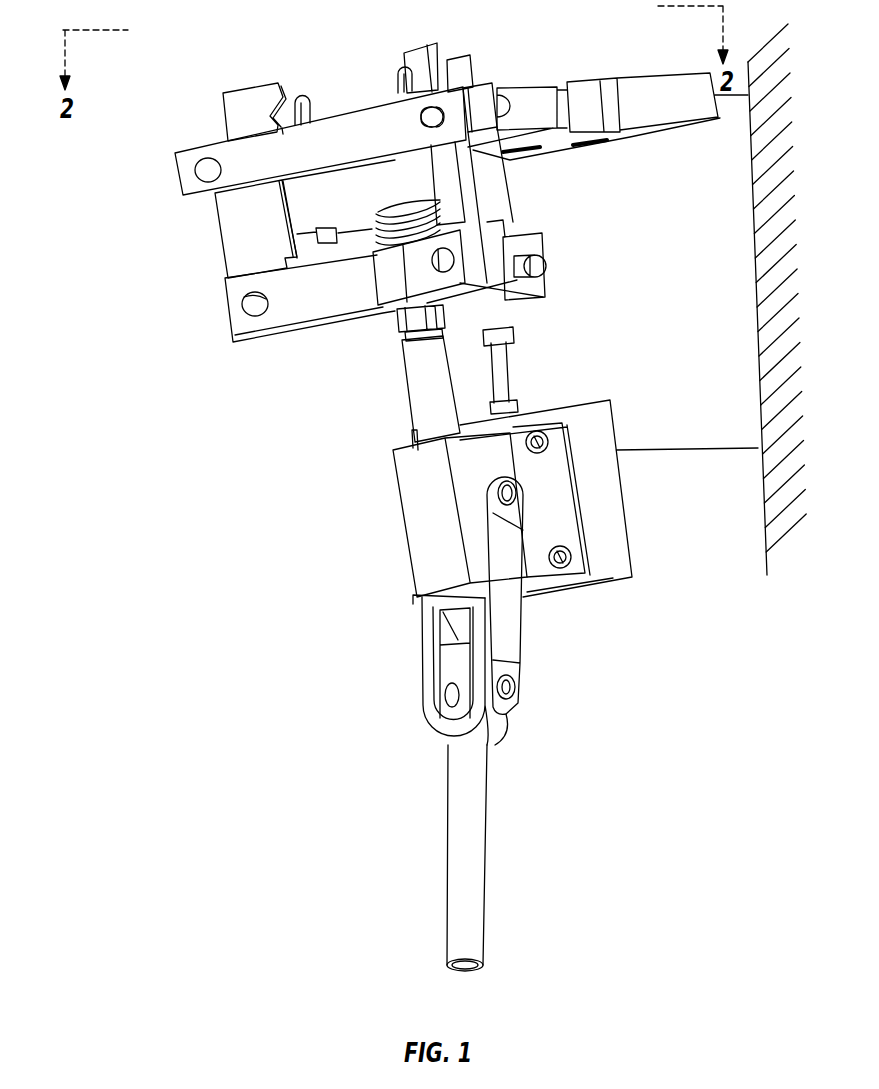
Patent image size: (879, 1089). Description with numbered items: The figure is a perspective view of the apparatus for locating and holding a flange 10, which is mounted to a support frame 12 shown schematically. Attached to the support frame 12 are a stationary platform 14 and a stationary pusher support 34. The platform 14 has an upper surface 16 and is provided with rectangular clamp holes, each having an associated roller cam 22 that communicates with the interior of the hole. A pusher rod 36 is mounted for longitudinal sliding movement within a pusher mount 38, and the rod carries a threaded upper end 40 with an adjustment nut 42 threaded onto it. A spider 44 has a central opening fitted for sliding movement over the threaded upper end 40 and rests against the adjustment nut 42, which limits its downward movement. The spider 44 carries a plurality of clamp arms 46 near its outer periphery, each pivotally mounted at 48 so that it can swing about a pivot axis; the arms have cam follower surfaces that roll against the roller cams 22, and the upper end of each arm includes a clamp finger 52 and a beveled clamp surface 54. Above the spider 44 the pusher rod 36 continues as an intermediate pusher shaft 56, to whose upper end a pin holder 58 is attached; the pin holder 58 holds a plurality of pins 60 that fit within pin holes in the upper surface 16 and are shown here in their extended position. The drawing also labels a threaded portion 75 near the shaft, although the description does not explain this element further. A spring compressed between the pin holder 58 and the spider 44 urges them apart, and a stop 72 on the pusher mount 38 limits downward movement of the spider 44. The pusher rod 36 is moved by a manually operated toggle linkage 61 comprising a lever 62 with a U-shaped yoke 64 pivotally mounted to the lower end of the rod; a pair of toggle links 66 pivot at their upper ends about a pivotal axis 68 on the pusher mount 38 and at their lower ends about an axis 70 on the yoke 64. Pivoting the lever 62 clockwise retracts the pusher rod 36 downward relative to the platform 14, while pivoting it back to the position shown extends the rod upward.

The apparatus for locating and holding a flange 10 is at (360, 432).
The support frame 12 is at (754, 297).
The stationary platform 14 is at (182, 183).
The upper surface 16 is at (383, 102).
The roller cam 22 is at (205, 158).
The stationary pusher support 34 is at (612, 512).
The pusher rod 36 is at (408, 405).
The pusher mount 38 is at (415, 525).
The threaded upper end 40 is at (406, 338).
The adjustment nut 42 is at (397, 318).
The spider 44 is at (232, 331).
The clamp arms 46 is at (217, 91).
The pivotal mounting 48 is at (238, 300).
The clamp finger 52 is at (262, 82).
The beveled clamp surface 54 is at (283, 132).
The intermediate pusher shaft 56 is at (370, 247).
The pin holder 58 is at (315, 212).
The pins 60 is at (300, 97).
The toggle linkage 61 is at (418, 655).
The lever 62 is at (455, 838).
The U-shaped yoke 64 is at (445, 677).
The toggle links 66 is at (420, 603).
The pivotal axis 68 is at (502, 485).
The axis 70 is at (514, 690).
The stop 72 is at (510, 357).
The threaded portion 75 is at (392, 208).